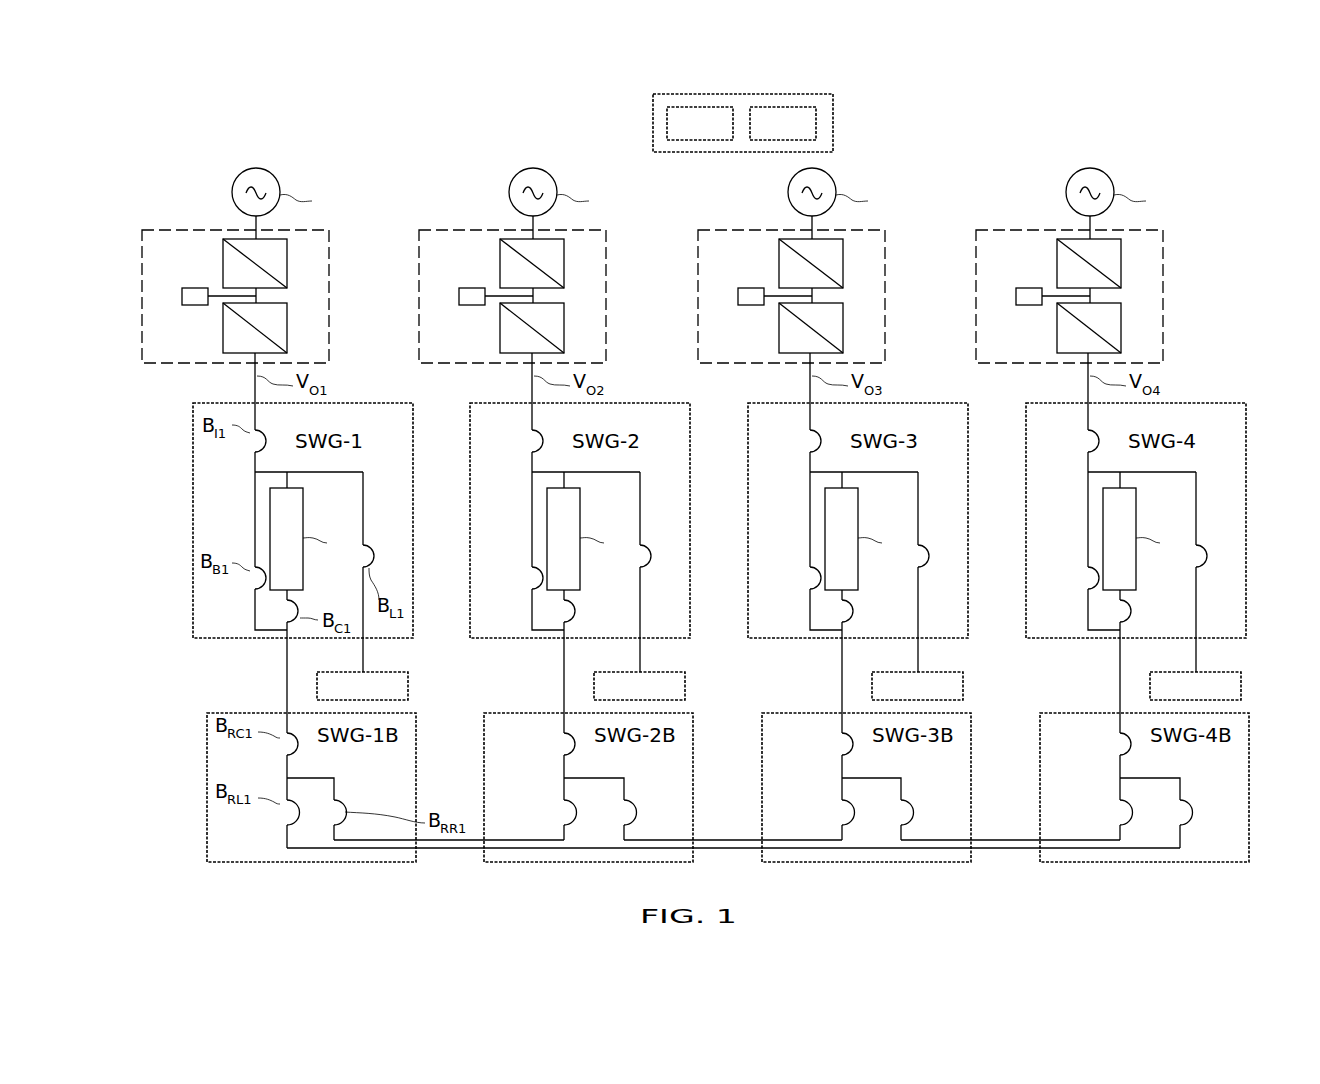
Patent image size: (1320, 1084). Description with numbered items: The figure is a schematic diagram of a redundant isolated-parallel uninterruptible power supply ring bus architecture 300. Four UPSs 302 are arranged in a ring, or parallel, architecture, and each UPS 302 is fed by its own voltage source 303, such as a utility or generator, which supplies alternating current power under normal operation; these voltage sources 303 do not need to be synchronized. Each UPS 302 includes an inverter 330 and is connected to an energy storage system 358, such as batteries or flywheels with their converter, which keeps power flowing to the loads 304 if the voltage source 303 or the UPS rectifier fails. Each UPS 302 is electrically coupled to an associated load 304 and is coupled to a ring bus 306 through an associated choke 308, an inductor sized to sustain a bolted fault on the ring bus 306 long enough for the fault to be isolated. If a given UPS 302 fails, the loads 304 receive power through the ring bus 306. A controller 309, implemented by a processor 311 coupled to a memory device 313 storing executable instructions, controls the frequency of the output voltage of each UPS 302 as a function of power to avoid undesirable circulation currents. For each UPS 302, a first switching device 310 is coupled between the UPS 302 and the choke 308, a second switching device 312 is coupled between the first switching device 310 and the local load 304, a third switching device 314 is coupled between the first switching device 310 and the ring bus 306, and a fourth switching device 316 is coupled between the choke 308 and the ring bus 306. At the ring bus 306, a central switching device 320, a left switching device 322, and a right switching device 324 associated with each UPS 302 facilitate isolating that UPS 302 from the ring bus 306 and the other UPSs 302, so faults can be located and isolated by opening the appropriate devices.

The ring bus architecture 300 is at (1189, 138).
The uninterruptible power supply 302 is at (177, 229).
The voltage source 303 is at (275, 172).
The load 304 is at (409, 686).
The ring bus 306 is at (290, 847).
The choke 308 is at (304, 520).
The controller 309 is at (785, 123).
The first switching device 310 is at (253, 449).
The processor 311 is at (716, 134).
The second switching device 312 is at (370, 546).
The memory device 313 is at (799, 134).
The third switching device 314 is at (253, 590).
The fourth switching device 316 is at (299, 602).
The central switching device 320 is at (283, 758).
The left switching device 322 is at (283, 821).
The right switching device 324 is at (781, 792).
The inverter 330 is at (224, 330).
The energy storage system 358 is at (181, 297).